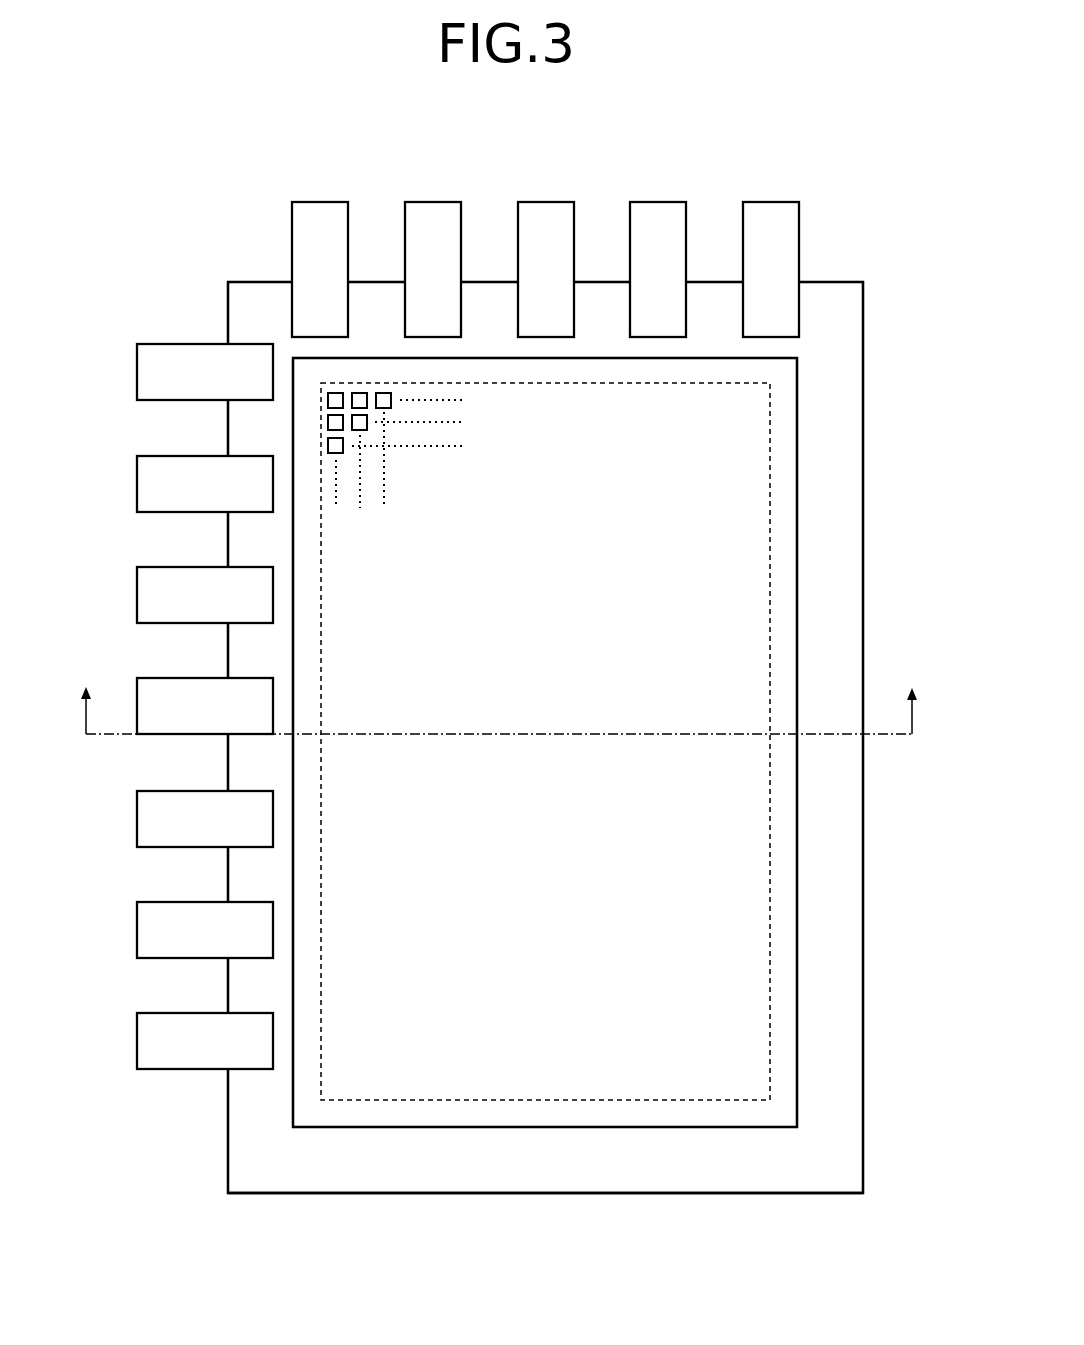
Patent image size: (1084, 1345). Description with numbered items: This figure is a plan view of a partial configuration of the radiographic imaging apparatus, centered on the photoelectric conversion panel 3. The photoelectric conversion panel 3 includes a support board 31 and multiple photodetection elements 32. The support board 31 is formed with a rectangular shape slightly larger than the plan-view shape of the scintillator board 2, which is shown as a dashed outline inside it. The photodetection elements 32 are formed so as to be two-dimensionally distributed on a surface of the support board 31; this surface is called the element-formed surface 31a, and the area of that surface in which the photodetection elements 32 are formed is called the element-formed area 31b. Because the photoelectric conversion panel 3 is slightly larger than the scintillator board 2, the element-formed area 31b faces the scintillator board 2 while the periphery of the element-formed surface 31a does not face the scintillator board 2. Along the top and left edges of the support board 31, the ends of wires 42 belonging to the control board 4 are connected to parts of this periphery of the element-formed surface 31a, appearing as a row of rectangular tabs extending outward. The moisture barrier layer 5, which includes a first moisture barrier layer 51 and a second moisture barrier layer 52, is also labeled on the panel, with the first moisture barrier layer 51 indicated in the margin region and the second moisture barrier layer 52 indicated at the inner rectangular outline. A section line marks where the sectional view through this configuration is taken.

The scintillator board 2 is at (705, 1101).
The photoelectric conversion panel 3 is at (499, 701).
The control board 4 is at (359, 233).
The moisture barrier layer 5 is at (584, 737).
The support board 31 is at (545, 778).
The element-formed surface 31a is at (529, 1170).
The element-formed area 31b is at (732, 875).
The photodetection elements 32 is at (337, 402).
The wires 42 is at (434, 599).
The first moisture barrier layer 51 is at (830, 530).
The second moisture barrier layer 52 is at (797, 427).